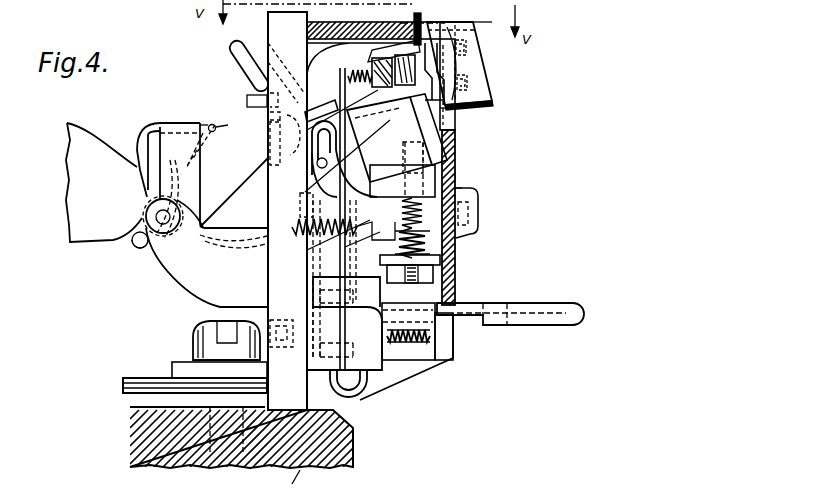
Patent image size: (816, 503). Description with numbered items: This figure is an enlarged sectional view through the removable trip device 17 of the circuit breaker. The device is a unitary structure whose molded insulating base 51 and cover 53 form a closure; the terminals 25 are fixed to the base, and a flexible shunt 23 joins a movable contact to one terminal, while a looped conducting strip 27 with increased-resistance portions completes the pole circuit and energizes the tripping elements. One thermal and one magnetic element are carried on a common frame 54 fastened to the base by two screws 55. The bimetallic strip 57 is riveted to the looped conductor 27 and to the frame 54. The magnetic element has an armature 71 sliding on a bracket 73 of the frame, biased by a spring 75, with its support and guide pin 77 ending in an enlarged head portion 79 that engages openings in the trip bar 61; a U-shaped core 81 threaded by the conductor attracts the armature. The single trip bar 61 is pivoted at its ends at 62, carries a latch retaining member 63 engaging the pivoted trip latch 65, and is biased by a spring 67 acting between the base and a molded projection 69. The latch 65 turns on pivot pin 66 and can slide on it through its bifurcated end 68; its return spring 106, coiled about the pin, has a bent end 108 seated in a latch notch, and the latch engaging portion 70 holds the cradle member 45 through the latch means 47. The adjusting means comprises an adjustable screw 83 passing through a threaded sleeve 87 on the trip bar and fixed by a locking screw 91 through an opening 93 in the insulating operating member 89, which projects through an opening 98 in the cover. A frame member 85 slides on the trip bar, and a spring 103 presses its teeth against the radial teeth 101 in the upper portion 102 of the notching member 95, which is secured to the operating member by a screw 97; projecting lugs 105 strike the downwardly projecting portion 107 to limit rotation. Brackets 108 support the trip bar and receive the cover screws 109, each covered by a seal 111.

The trip device 17 is at (200, 57).
The flexible shunt 23 is at (147, 378).
The terminal 25 is at (539, 303).
The looped conducting strip 27 is at (305, 268).
The cradle member 45 is at (108, 196).
The latch means 47 is at (260, 214).
The base 51 is at (268, 24).
The cover 53 is at (312, 21).
The common frame 54 is at (372, 373).
The screw 55 is at (287, 377).
The bimetallic strip 57 is at (341, 82).
The trip bar 61 is at (420, 124).
The pivot 62 is at (310, 168).
The latch retaining member 63 is at (321, 108).
The trip latch 65 is at (176, 125).
The pivot pin 66 is at (156, 220).
The spring 67 is at (307, 212).
The bifurcated end 68 is at (145, 248).
The projection 69 is at (338, 237).
The latch engaging portion 70 is at (150, 124).
The armature 71 is at (427, 272).
The bracket 73 is at (427, 252).
The spring 75 is at (458, 240).
The support and guide pin 77 is at (413, 179).
The enlarged head portion 79 is at (458, 152).
The U-shaped core 81 is at (420, 358).
The adjustable screw 83 is at (368, 72).
The frame member 85 is at (412, 21).
The threaded sleeve 87 is at (374, 106).
The operating member 89 is at (480, 73).
The locking screw 91 is at (470, 42).
The opening 93 is at (480, 22).
The notching member 95 is at (447, 118).
The screw 97 is at (486, 84).
The opening 98 is at (457, 137).
The teeth 101 is at (468, 66).
The upper portion 102 is at (431, 22).
The spring 103 is at (409, 145).
The projecting lug 105 is at (424, 11).
The return spring 106 is at (204, 165).
The downwardly projecting portion 107 is at (455, 113).
The bent end / bracket 108 is at (302, 171).
The screw 109 is at (480, 211).
The seal 111 is at (471, 197).